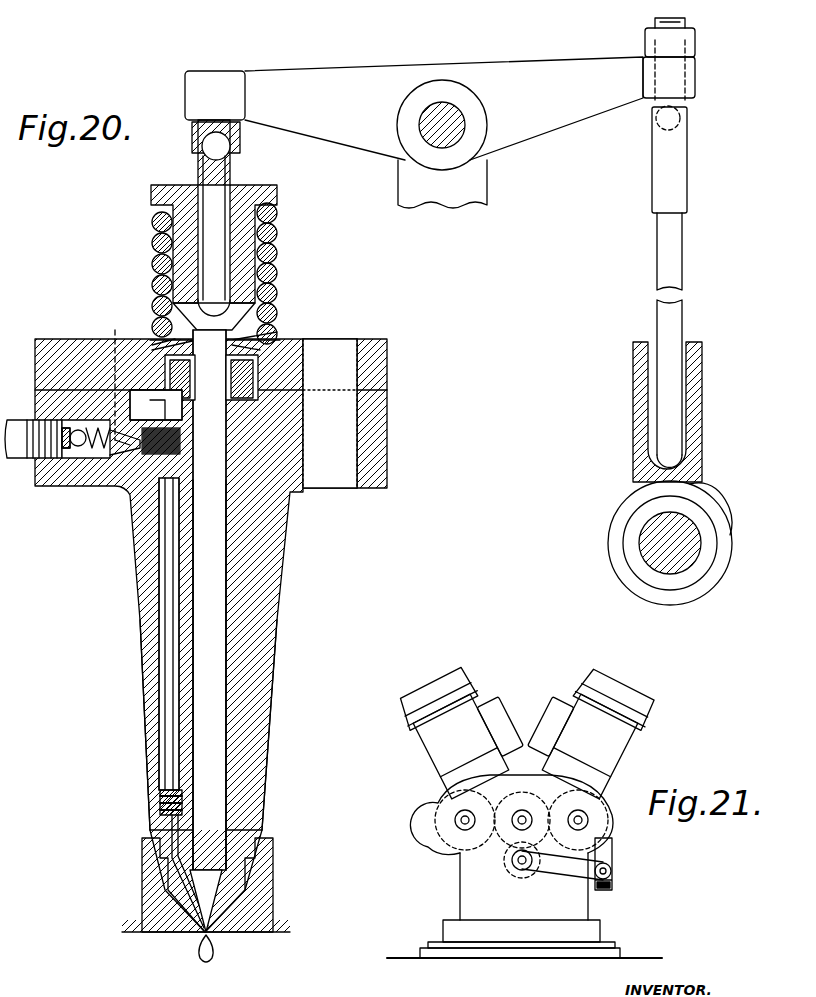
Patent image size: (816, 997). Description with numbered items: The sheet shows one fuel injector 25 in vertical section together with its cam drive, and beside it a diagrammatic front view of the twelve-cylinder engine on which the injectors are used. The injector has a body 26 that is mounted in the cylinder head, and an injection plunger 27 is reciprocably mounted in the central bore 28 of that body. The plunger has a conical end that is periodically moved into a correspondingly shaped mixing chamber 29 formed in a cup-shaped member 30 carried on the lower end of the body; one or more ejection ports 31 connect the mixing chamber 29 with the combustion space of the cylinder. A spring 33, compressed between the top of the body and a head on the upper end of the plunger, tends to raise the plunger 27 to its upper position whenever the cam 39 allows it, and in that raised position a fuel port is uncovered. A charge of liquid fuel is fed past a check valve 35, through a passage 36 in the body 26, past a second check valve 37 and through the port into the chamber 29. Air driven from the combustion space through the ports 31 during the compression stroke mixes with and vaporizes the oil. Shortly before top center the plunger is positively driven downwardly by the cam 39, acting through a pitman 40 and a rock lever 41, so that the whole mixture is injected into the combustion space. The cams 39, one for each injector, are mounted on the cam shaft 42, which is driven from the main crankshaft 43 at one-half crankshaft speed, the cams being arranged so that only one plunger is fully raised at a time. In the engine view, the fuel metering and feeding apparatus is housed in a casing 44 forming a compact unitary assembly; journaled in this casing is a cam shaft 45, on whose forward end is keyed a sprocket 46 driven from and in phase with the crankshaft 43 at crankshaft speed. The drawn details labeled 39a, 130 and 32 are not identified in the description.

In FIG. 20, the rock lever 41 is at (334, 80).
In FIG. 20, the pitman 40 is at (680, 262).
In FIG. 20, the cam 39 is at (718, 572).
In FIG. 20, the cam shaft 42 is at (648, 522).
In FIG. 21, the cam shaft 42 is at (466, 818).
In FIG. 20, the spring cap 39a is at (278, 192).
In FIG. 20, the spring 33 is at (276, 250).
In FIG. 20, the body 26 is at (387, 440).
In FIG. 20, the check valve 35 is at (72, 455).
In FIG. 20, the fuel passage 130 is at (107, 380).
In FIG. 20, the injector 25 is at (291, 664).
In FIG. 20, the central bore 28 is at (235, 750).
In FIG. 20, the passage 36 is at (165, 685).
In FIG. 20, the second check valve 37 is at (163, 797).
In FIG. 20, the discharge channel 32 is at (178, 882).
In FIG. 20, the cup-shaped member 30 is at (165, 926).
In FIG. 20, the mixing chamber 29 is at (225, 918).
In FIG. 20, the injection plunger 27 is at (205, 848).
In FIG. 20, the ejection ports 31 is at (205, 960).
In FIG. 21, the main crankshaft 43 is at (514, 868).
In FIG. 21, the casing 44 is at (620, 860).
In FIG. 21, the sprocket 46 is at (612, 868).
In FIG. 21, the cam shaft 45 is at (612, 878).